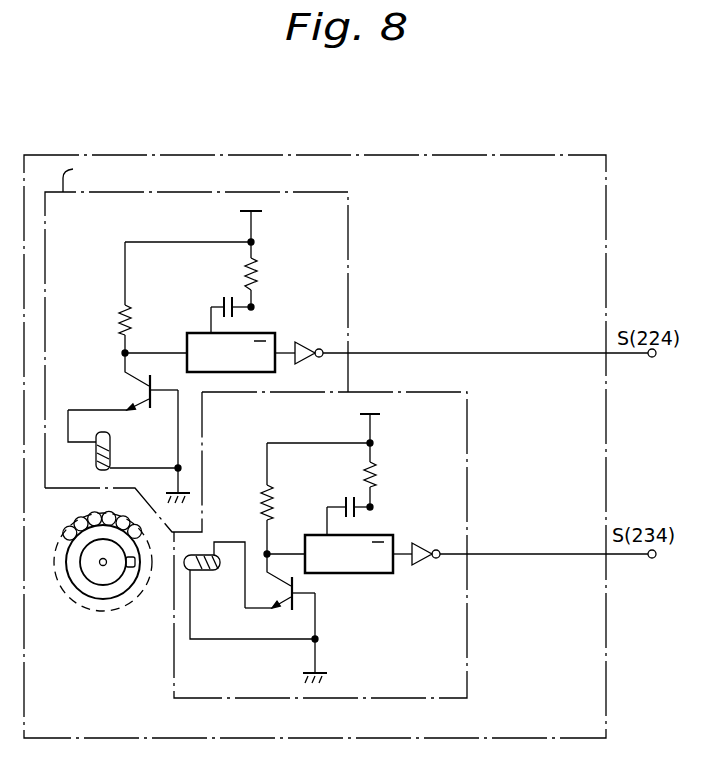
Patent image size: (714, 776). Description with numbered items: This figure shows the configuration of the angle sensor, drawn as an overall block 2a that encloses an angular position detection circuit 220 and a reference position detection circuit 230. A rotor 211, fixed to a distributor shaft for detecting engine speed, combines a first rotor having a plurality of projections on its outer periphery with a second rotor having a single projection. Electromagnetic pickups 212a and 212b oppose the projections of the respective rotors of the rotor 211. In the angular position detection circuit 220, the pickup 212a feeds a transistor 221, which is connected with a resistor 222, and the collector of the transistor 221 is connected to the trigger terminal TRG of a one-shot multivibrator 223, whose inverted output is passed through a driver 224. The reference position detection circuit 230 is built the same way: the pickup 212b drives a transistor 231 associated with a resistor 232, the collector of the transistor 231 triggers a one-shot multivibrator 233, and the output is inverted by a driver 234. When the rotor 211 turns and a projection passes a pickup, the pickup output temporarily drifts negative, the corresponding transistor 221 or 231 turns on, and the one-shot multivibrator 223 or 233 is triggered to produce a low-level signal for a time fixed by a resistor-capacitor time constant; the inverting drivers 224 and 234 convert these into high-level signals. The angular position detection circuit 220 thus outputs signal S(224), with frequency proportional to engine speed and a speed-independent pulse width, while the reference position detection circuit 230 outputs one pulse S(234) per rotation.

The position detector circuit 2a is at (660, 203).
The angular position detection circuit 220 is at (415, 278).
The reference position detection circuit 230 is at (532, 625).
The rotor 211 is at (95, 600).
The electromagnetic pickup 212a is at (110, 456).
The electromagnetic pickup 212b is at (201, 553).
The transistor 221 is at (138, 394).
The resistor 222 is at (121, 319).
The one-shot multivibrator 223 is at (186, 333).
The driver 224 is at (307, 330).
The transistor 231 is at (268, 599).
The resistor 232 is at (272, 494).
The one-shot multivibrator 233 is at (353, 573).
The driver 234 is at (426, 567).